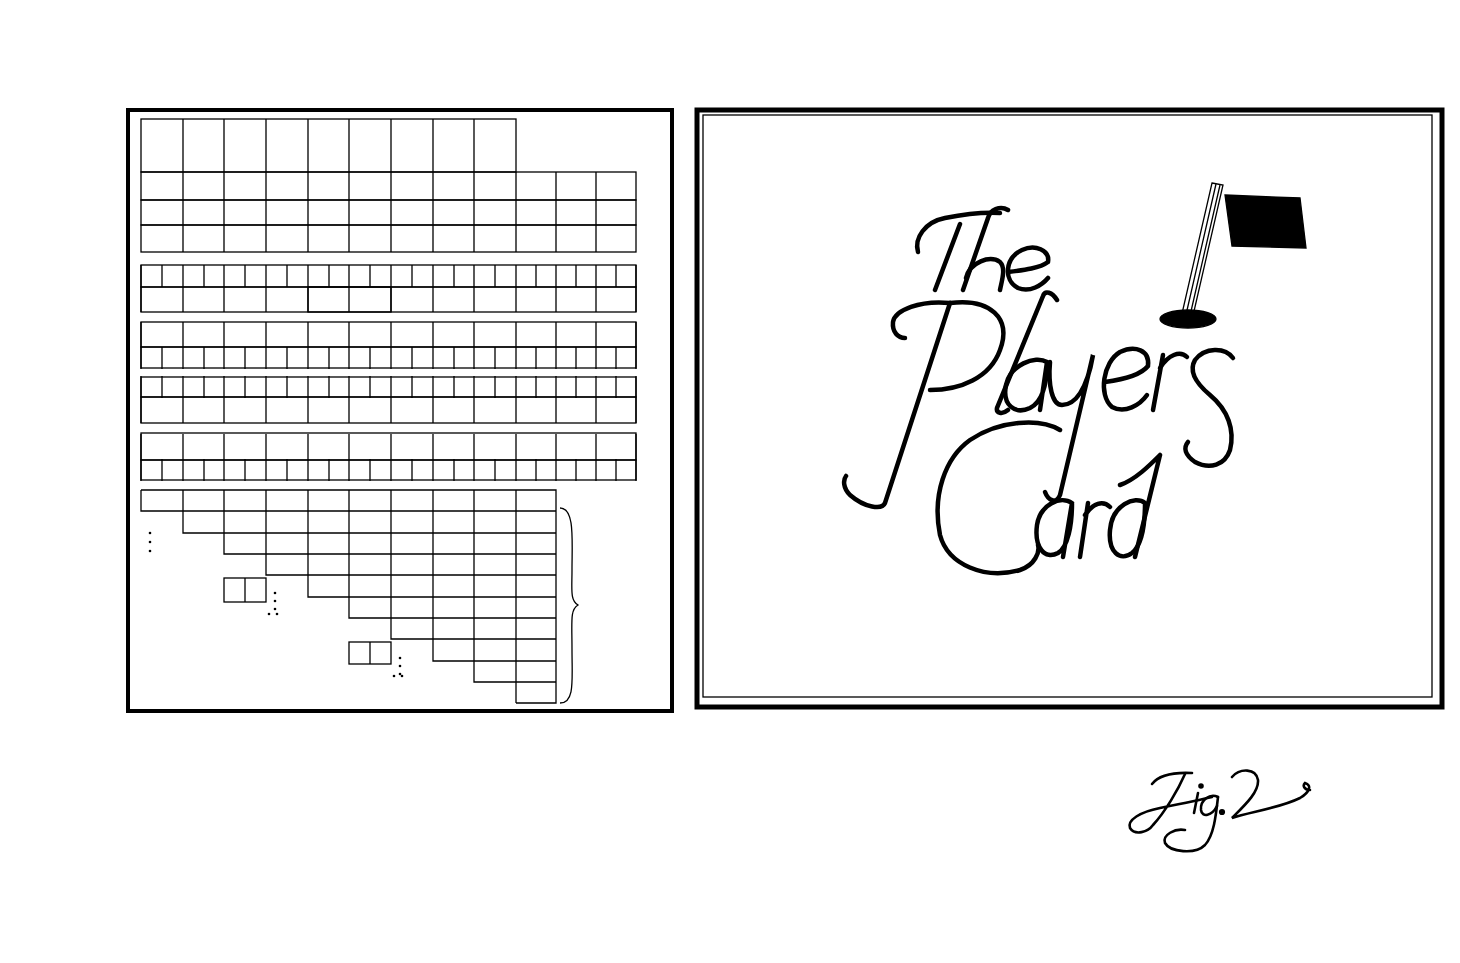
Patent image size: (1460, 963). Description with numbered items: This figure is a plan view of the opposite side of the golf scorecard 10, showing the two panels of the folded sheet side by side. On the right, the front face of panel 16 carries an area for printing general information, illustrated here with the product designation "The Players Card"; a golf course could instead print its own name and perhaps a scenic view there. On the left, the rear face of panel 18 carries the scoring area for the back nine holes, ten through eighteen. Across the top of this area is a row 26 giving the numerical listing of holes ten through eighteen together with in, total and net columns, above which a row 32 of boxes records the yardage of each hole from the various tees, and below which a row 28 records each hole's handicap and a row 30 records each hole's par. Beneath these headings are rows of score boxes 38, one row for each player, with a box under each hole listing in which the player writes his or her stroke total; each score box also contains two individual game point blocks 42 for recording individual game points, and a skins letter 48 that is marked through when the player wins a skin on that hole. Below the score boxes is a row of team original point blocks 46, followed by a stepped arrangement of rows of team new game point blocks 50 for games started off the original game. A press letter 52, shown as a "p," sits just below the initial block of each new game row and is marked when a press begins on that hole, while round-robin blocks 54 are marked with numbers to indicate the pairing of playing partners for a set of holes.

The golf scorecard 10 is at (1069, 402).
The panel 16 is at (1022, 683).
The panel 18 is at (412, 695).
The row 26 is at (114, 187).
The row 28 is at (114, 217).
The row of boxes 30 is at (114, 247).
The row of boxes 32 is at (114, 145).
The rows of score boxes 38 is at (141, 447).
The rows of individual game point blocks 42 is at (141, 472).
The row of team original point blocks 46 is at (118, 506).
The skins letters 48 is at (387, 297).
The rows of team new game point blocks 50 is at (578, 605).
The press letters 52 is at (488, 697).
The round-robin blocks 54 is at (352, 665).